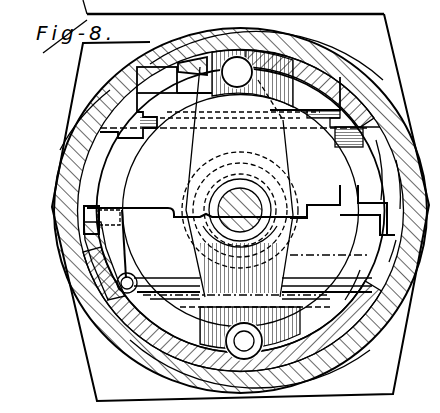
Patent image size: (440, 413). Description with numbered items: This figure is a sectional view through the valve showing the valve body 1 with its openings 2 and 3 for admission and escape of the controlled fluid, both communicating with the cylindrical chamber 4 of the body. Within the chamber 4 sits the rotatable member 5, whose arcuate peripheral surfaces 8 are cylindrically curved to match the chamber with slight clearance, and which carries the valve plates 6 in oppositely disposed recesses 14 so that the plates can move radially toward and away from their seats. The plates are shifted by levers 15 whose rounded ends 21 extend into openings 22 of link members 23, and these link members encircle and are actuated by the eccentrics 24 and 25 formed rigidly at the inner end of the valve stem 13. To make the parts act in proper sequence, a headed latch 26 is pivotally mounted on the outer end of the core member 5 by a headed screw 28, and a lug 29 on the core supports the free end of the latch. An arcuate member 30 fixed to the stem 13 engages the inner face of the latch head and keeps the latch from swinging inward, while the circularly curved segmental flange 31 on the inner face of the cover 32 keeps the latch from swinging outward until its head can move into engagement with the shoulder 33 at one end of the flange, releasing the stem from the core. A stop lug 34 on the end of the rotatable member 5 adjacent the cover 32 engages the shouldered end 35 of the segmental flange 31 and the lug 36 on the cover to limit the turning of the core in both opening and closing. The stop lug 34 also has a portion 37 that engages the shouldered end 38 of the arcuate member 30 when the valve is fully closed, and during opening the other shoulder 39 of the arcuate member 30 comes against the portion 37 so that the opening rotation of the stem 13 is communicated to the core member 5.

The valve body 1 is at (390, 380).
The opening 2 is at (338, 28).
The opening 3 is at (328, 372).
The cylindrical chamber 4 is at (92, 148).
The rotatable member 5 is at (385, 156).
The valve plates 6 is at (300, 85).
The arcuate peripheral surfaces 8 is at (97, 166).
The valve stem 13 is at (258, 204).
The recesses 14 is at (343, 96).
The levers 15 is at (236, 87).
The ends of the levers 21 is at (208, 80).
The openings 22 is at (257, 82).
The link members 23 is at (197, 144).
The eccentric 24 is at (213, 236).
The eccentric 25 is at (285, 262).
The headed latch 26 is at (118, 250).
The headed screw 28 is at (133, 278).
The lug 29 is at (125, 222).
The arcuate member 30 is at (272, 128).
The segmental flange 31 is at (86, 285).
The cover 32 is at (372, 292).
The shoulder 33 is at (88, 232).
The stop lug 34 is at (390, 200).
The shouldered end 35 is at (405, 266).
The lug or shoulder 36 is at (180, 70).
The portion 37 is at (358, 218).
The shouldered end 38 is at (338, 212).
The shoulder 39 is at (142, 206).